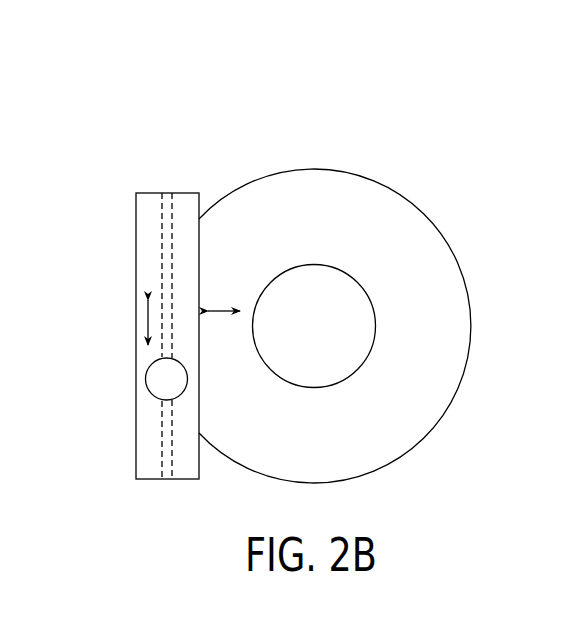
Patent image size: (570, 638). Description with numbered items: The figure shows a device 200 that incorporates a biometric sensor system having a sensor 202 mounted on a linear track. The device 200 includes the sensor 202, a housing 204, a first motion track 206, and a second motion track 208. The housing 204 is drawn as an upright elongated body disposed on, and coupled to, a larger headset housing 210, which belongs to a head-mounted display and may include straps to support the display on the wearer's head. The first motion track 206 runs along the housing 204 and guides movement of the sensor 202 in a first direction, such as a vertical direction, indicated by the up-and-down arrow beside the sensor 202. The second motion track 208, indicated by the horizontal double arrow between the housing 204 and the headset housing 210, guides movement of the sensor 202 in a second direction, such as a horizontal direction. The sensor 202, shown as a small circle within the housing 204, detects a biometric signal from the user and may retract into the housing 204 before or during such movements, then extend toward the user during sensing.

The device 200 is at (212, 104).
The sensor 202 is at (150, 370).
The housing 204 is at (148, 193).
The first motion track 206 is at (160, 226).
The second motion track 208 is at (225, 312).
The headset housing 210 is at (433, 222).